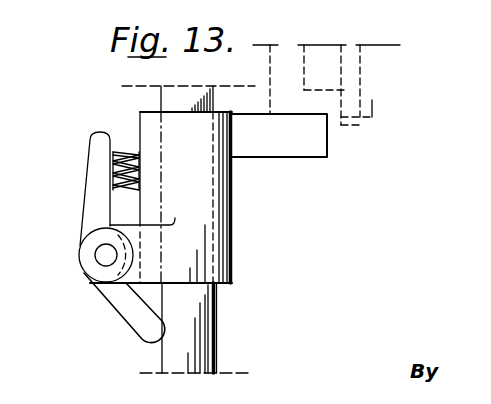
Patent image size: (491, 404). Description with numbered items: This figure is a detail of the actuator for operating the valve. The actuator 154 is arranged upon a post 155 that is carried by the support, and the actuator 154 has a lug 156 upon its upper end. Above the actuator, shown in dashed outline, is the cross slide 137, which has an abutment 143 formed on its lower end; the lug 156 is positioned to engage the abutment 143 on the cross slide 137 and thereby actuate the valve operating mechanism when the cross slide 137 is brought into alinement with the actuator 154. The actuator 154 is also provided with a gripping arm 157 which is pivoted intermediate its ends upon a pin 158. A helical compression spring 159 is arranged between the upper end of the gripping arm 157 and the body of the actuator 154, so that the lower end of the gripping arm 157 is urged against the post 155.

The cross slide 137 is at (280, 60).
The abutment 143 is at (375, 101).
The actuator 154 is at (273, 183).
The post 155 is at (214, 335).
The lug 156 is at (279, 135).
The gripping arm 157 is at (128, 305).
The pin 158 is at (105, 257).
The helical compression spring 159 is at (135, 152).